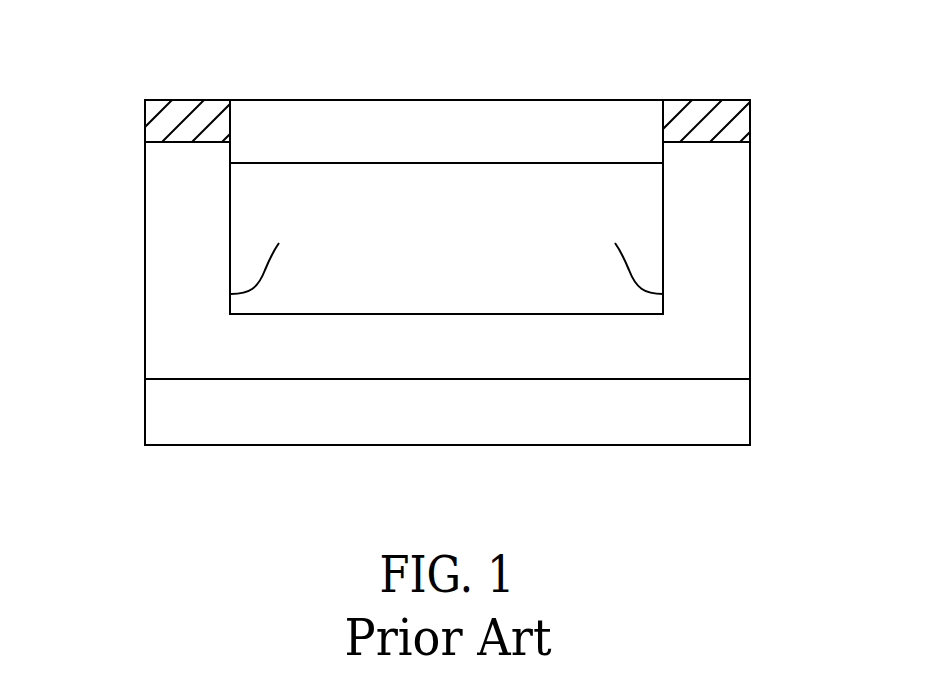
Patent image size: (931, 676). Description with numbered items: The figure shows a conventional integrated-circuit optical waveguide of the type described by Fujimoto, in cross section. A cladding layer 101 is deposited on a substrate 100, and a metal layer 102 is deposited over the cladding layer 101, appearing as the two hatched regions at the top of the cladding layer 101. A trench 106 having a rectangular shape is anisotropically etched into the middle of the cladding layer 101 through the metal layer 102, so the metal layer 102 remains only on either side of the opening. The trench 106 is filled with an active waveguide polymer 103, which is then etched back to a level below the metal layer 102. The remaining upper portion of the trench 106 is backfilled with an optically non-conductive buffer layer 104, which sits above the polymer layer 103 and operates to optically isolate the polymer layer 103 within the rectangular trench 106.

The substrate 100 is at (718, 411).
The cladding layer 101 is at (718, 240).
The metal layer 102 is at (157, 114).
The active waveguide polymer 103 is at (472, 239).
The optically non-conductive buffer layer 104 is at (441, 120).
The trench 106 is at (447, 252).